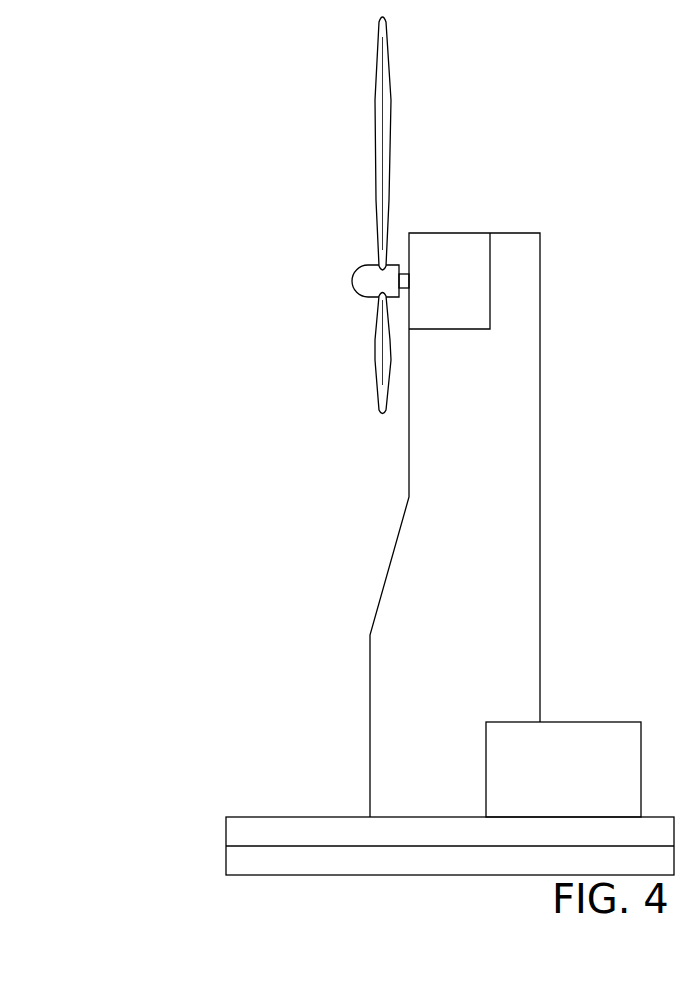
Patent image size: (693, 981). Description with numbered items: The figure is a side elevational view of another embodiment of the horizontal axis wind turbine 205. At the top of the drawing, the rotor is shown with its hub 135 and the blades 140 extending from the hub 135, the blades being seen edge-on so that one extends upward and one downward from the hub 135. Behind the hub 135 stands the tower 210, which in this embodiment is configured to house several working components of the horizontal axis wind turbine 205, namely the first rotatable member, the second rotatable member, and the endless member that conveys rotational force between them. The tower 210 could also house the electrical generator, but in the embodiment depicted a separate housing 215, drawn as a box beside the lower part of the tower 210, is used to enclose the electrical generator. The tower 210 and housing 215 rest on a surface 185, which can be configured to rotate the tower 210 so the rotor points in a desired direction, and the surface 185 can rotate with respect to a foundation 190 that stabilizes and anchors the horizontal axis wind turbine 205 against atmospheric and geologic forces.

The horizontal axis wind turbine 205 is at (275, 50).
The blades 140 is at (374, 105).
The hub 135 is at (356, 268).
The tower 210 is at (390, 556).
The housing 215 is at (590, 722).
The surface 185 is at (258, 817).
The foundation 190 is at (226, 860).